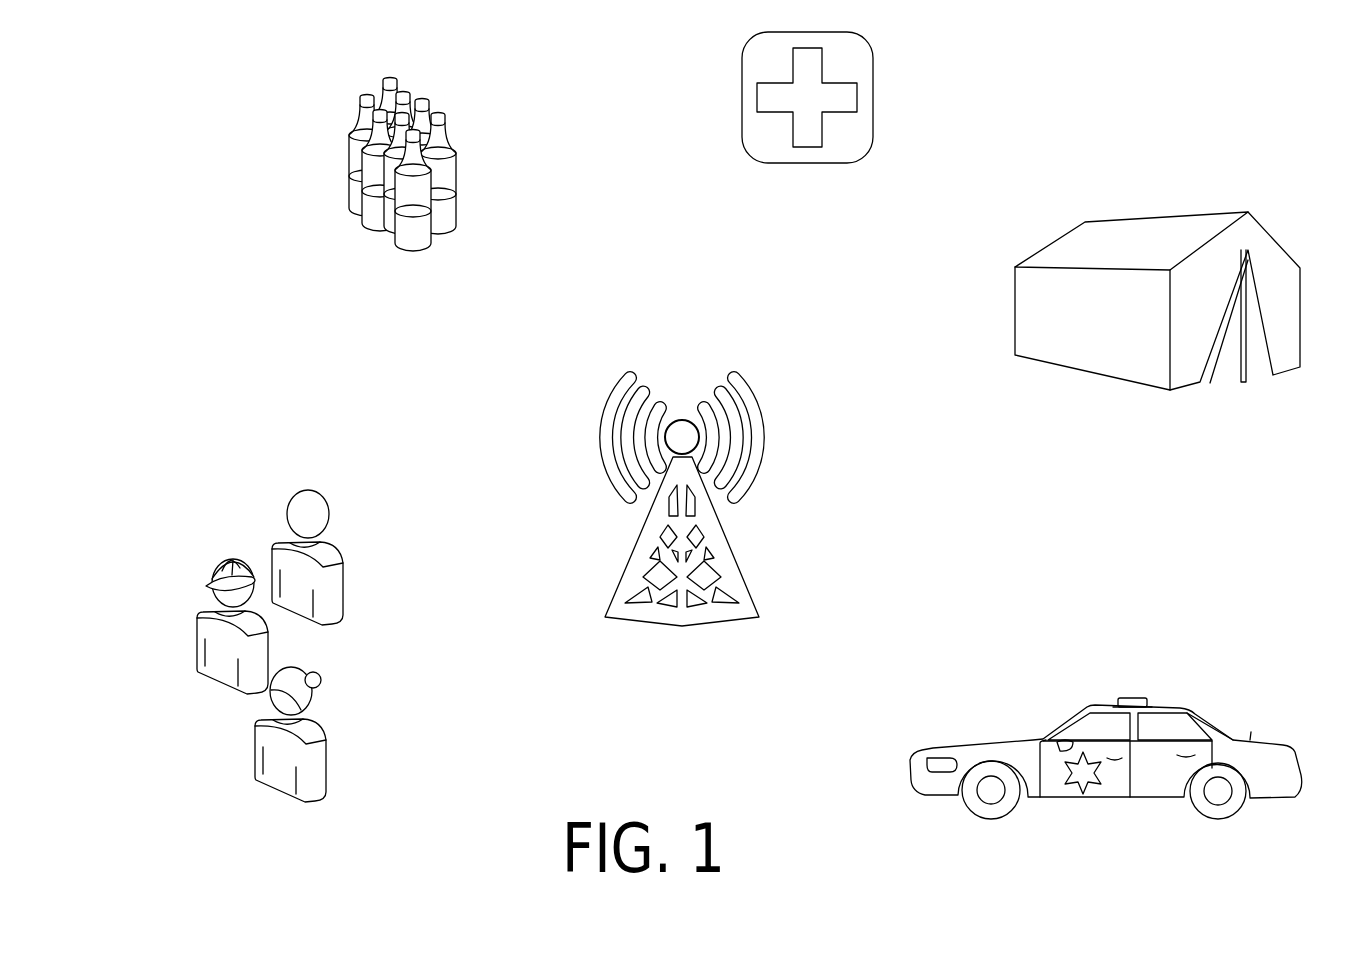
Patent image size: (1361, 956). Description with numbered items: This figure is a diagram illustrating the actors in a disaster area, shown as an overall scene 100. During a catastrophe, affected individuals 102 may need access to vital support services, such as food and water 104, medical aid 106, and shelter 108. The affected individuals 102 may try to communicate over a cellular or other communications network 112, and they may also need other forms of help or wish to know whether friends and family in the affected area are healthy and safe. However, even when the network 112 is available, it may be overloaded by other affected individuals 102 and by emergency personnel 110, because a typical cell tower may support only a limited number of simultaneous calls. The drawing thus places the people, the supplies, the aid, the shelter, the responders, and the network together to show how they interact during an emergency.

The disaster response environment 100 is at (1126, 88).
The affected individuals 102 is at (383, 523).
The food and water 104 is at (456, 150).
The medical aid 106 is at (876, 87).
The shelter 108 is at (1265, 229).
The emergency personnel 110 is at (1181, 707).
The cellular or other communications network 112 is at (736, 577).